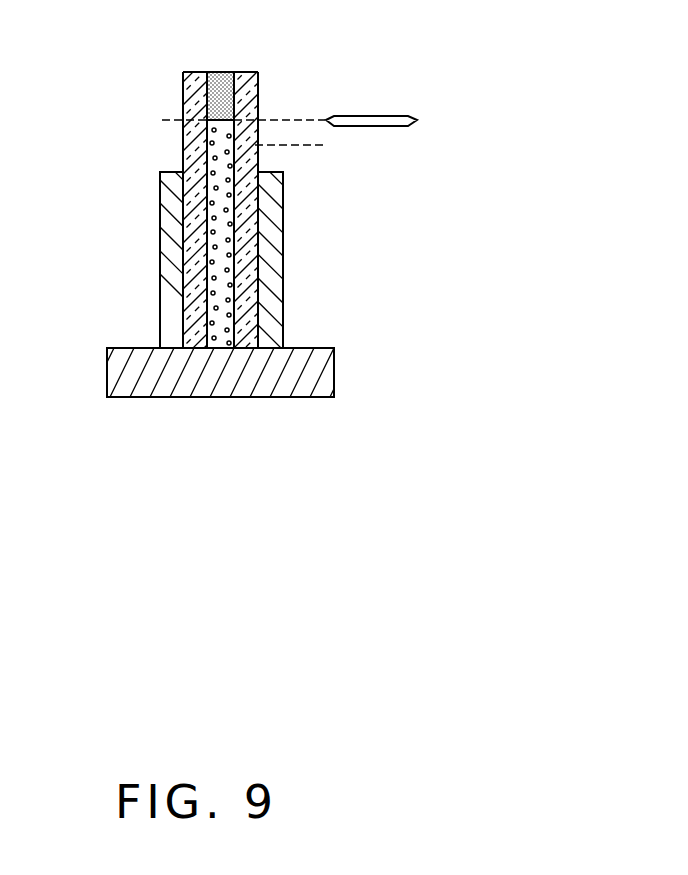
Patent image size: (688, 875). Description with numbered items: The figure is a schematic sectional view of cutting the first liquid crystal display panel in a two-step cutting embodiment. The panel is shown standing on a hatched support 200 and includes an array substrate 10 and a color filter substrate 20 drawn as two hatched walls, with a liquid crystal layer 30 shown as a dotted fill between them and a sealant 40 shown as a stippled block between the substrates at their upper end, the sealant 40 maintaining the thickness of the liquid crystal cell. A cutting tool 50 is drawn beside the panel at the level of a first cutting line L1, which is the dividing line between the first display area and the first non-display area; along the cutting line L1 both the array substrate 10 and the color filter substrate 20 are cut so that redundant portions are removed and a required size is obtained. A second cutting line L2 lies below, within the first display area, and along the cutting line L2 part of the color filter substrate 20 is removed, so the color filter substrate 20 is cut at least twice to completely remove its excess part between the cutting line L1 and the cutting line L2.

The array substrate 10 is at (195, 97).
The color filter substrate 20 is at (252, 100).
The liquid crystal layer 30 is at (223, 222).
The sealant 40 is at (220, 80).
The cutting tool 50 is at (385, 118).
The holder block / support 200 is at (270, 277).
The cutting line L1 is at (162, 120).
The cutting line L2 is at (303, 145).